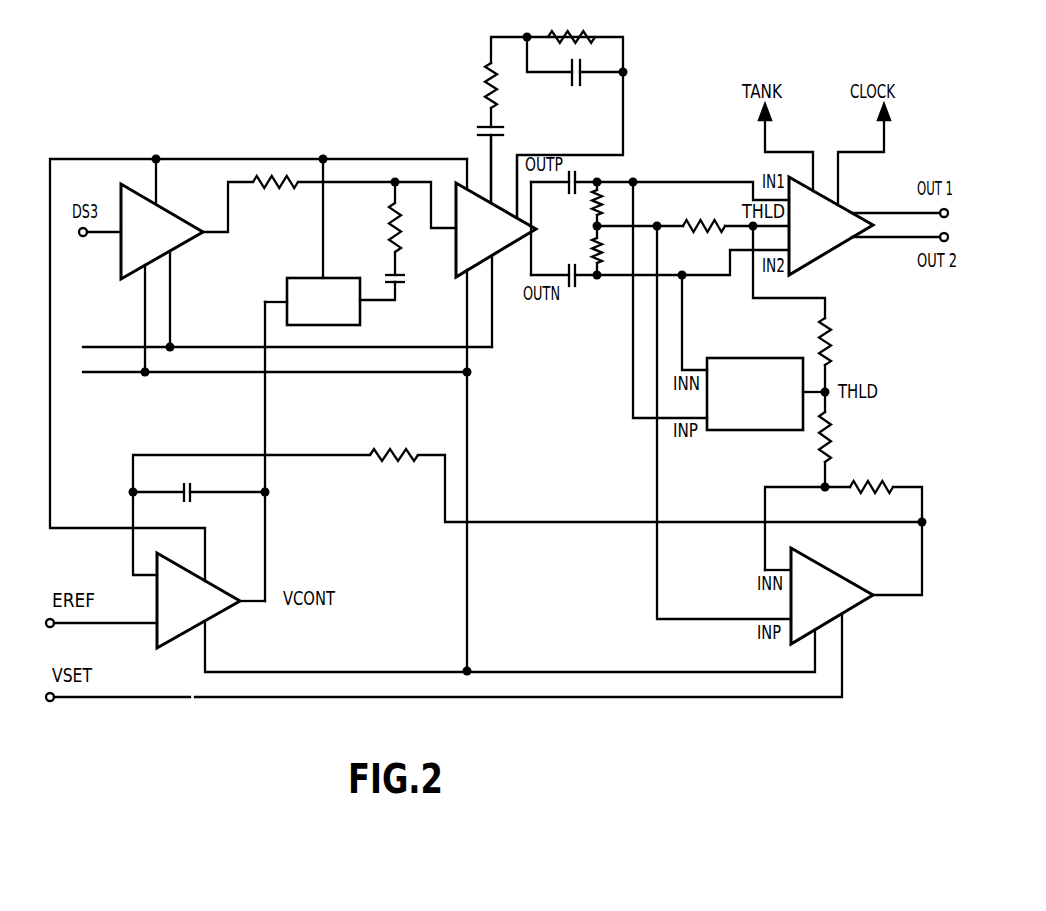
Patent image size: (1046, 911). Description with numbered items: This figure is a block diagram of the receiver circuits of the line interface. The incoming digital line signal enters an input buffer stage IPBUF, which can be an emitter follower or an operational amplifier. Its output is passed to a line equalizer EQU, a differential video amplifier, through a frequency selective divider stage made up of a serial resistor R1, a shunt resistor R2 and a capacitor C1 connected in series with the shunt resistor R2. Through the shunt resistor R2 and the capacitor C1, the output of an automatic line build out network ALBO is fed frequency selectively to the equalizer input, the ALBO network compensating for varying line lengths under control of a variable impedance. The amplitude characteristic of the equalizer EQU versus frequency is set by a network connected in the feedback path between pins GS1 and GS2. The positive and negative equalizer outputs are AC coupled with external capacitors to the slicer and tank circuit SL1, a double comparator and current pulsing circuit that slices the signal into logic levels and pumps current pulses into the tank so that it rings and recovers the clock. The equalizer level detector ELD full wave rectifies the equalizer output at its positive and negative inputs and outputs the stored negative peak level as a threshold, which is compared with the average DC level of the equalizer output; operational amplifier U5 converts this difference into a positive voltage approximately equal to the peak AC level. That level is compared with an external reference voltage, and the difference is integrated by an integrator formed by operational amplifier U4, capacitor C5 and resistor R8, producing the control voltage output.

The input buffer stage IPBUF is at (162, 231).
The serial resistor R1 is at (275, 196).
The shunt resistor R2 is at (379, 227).
The capacitor C1 is at (407, 283).
The automatic line build out network ALBO is at (323, 301).
The line equalizer EQU is at (496, 230).
The feedback pin GS1 is at (490, 191).
The feedback pin GS2 is at (515, 191).
The slicer and tank circuit SL1 is at (831, 226).
The equalizer level detector ELD is at (755, 394).
The operational amplifier U5 is at (832, 596).
The operational amplifier U4 is at (198, 600).
The capacitor C5 is at (201, 480).
The resistor R8 is at (394, 470).